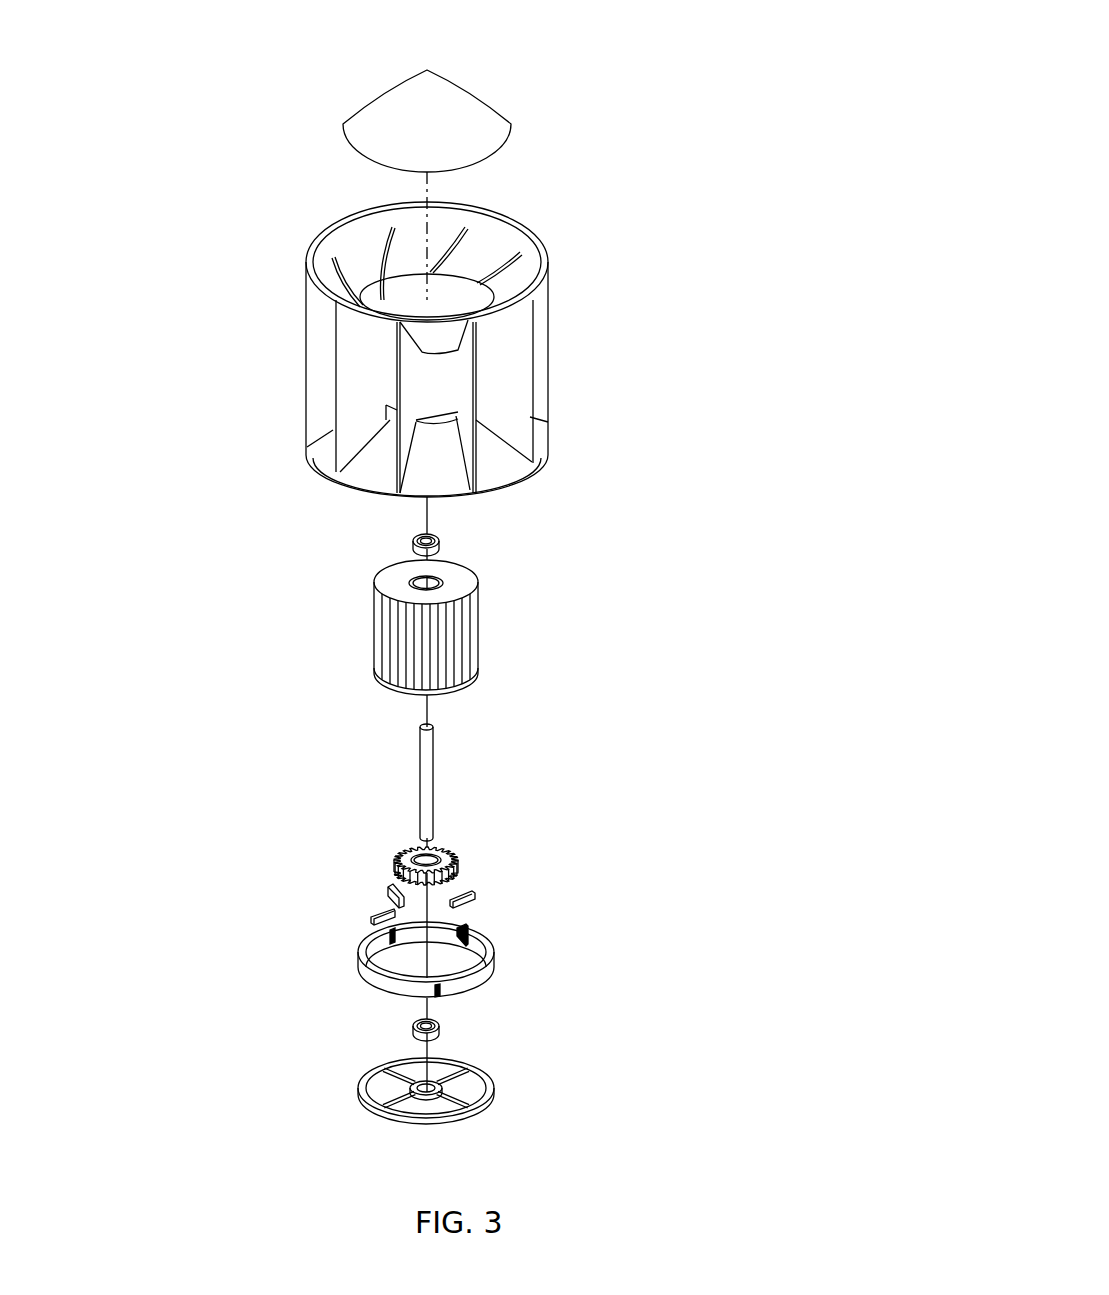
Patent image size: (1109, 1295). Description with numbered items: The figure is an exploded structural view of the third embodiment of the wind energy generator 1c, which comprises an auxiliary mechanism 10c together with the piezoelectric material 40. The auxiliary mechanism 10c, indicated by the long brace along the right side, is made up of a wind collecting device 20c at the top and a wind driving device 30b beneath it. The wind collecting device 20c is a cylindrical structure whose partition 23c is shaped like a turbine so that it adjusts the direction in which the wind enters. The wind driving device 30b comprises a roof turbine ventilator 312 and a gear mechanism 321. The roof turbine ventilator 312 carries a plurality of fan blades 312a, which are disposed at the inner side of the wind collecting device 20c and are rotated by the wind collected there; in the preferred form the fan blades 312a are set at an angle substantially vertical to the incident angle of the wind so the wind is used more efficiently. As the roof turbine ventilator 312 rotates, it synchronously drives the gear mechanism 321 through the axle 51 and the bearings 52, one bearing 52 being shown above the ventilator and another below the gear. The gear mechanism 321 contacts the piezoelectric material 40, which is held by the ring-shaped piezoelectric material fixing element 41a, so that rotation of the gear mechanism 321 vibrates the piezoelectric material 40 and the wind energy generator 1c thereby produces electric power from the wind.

The wind energy generator 1c is at (695, 50).
The auxiliary mechanism 10c is at (702, 62).
The wind collecting device 20c is at (290, 205).
The partition 23c is at (360, 390).
The wind driving device 30b is at (576, 496).
The roof turbine ventilator 312 is at (397, 575).
The fan blades 312a is at (380, 650).
The axle 51 is at (432, 806).
The gear mechanism 321 is at (400, 852).
The piezoelectric material 40 is at (375, 918).
The piezoelectric material fixing element 41a is at (380, 985).
The bearing 52 is at (440, 542).